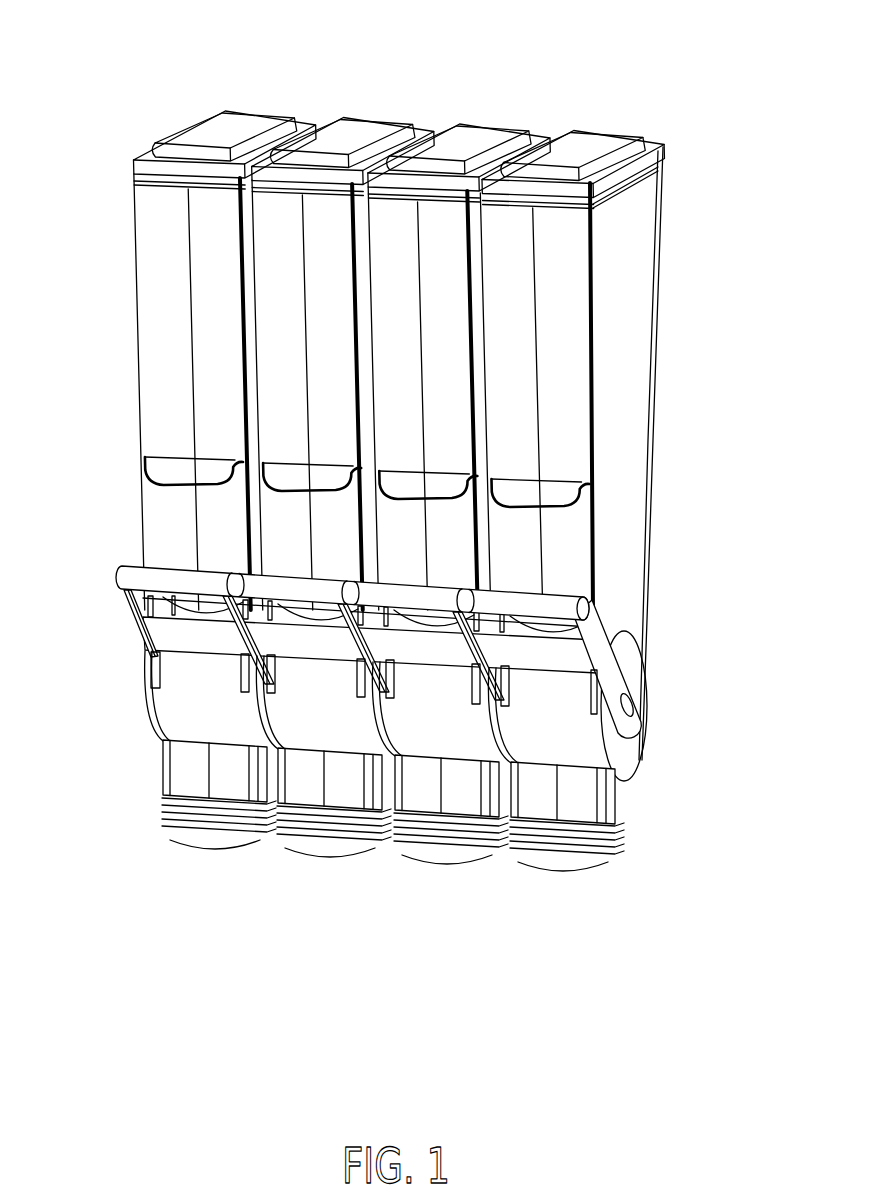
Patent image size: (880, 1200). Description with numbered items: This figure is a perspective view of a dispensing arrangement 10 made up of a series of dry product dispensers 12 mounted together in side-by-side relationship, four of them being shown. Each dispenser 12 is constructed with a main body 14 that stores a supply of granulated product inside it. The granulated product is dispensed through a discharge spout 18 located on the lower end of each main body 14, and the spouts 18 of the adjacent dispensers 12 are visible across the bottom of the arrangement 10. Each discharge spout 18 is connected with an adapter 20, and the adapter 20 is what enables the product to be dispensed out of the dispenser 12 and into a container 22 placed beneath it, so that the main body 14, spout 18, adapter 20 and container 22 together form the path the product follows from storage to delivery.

The dispensing arrangement 10 is at (405, 531).
The dry product dispenser 12 is at (295, 330).
The main body 14 is at (655, 447).
The discharge spout 18 is at (188, 773).
The adapter 20 is at (453, 845).
The container 22 is at (185, 998).